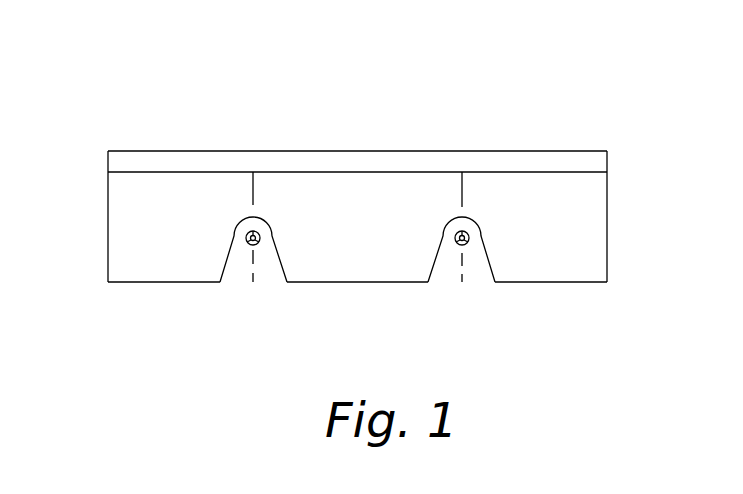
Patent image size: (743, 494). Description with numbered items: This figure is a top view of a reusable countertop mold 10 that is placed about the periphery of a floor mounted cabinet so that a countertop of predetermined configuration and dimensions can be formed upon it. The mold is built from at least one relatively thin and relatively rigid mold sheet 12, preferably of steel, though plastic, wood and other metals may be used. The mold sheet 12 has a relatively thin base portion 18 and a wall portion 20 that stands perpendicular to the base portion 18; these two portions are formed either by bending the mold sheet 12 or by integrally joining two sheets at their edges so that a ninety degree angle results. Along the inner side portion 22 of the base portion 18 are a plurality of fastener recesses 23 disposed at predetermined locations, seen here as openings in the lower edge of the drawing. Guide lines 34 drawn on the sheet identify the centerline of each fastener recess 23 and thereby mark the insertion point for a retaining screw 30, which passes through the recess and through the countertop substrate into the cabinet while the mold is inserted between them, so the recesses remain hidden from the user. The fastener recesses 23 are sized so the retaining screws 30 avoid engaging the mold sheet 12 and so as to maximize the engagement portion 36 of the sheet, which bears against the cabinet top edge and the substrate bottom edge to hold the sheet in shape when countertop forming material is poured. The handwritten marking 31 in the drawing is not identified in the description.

The reusable countertop mold 10 is at (549, 97).
The mold sheet 12 is at (107, 229).
The base portion 18 is at (570, 215).
The wall portion 20 is at (332, 161).
The inner side portion 22 is at (362, 262).
The fastener recess 23 is at (267, 276).
The retaining screw 30 is at (456, 239).
The attachment tab 31 is at (255, 268).
The guide line 34 is at (253, 188).
The engagement portion 36 is at (165, 262).